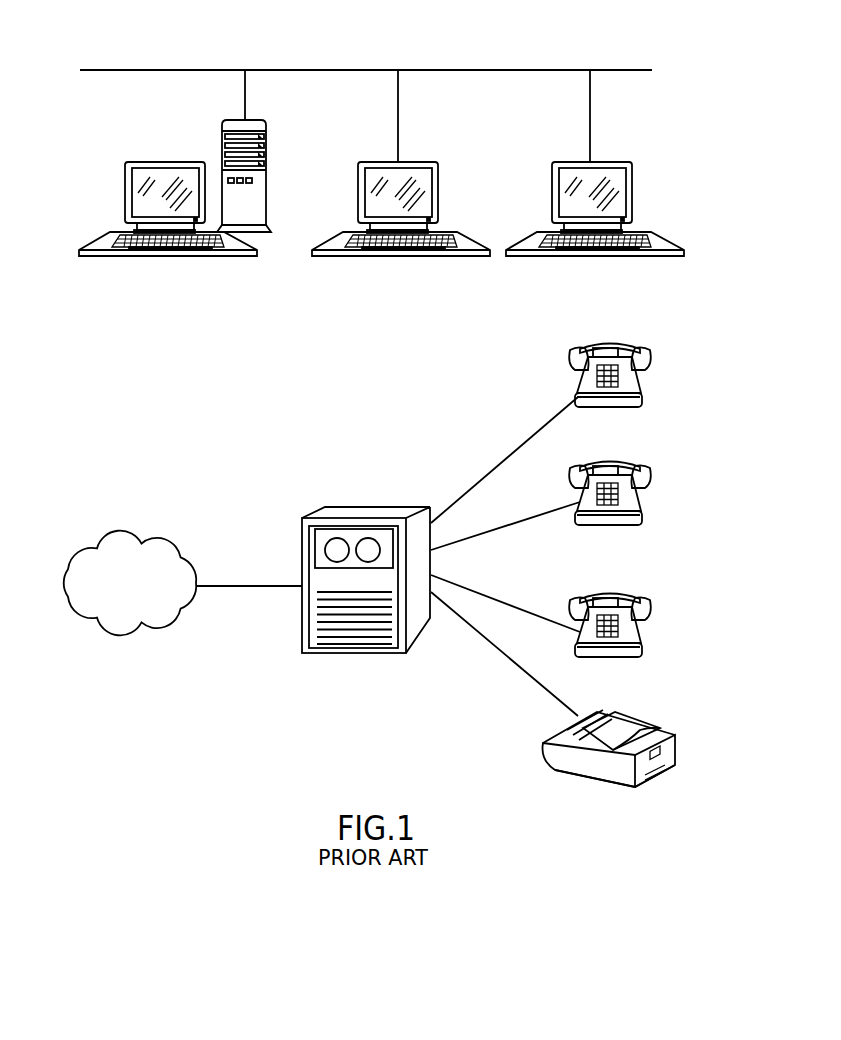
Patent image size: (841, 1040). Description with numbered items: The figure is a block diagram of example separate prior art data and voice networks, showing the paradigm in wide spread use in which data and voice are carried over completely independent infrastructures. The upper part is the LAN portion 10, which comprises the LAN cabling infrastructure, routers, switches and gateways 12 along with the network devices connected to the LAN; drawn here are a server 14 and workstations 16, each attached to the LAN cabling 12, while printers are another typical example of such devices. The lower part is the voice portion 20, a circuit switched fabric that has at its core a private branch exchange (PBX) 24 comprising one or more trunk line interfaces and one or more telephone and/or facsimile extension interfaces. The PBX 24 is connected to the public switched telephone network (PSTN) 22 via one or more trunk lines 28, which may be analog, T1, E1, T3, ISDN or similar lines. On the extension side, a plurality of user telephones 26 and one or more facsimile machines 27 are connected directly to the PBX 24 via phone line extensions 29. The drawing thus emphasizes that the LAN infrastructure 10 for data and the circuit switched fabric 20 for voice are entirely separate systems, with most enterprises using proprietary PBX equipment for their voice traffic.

The LAN portion 10 is at (103, 303).
The LAN cabling infrastructure, routers, switches and gateways 12 is at (638, 70).
The server 14 is at (268, 152).
The workstations 16 is at (558, 160).
The voice portion 20 is at (142, 694).
The public switched telephone network (PSTN) 22 is at (117, 535).
The private branch exchange (PBX) 24 is at (362, 510).
The user telephones 26 is at (638, 497).
The facsimile machine 27 is at (660, 730).
The trunk lines 28 is at (256, 588).
The phone line extensions 29 is at (508, 450).